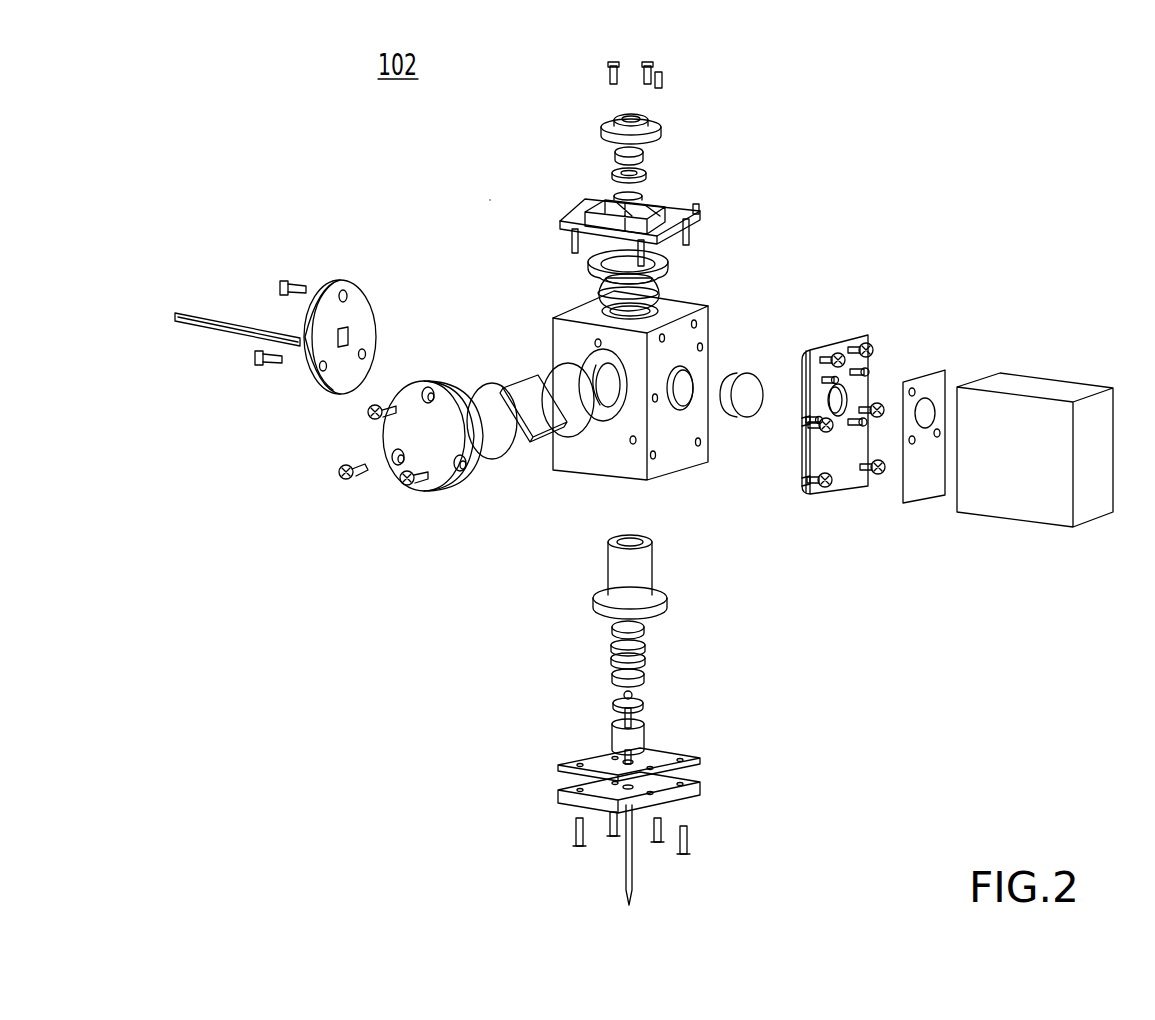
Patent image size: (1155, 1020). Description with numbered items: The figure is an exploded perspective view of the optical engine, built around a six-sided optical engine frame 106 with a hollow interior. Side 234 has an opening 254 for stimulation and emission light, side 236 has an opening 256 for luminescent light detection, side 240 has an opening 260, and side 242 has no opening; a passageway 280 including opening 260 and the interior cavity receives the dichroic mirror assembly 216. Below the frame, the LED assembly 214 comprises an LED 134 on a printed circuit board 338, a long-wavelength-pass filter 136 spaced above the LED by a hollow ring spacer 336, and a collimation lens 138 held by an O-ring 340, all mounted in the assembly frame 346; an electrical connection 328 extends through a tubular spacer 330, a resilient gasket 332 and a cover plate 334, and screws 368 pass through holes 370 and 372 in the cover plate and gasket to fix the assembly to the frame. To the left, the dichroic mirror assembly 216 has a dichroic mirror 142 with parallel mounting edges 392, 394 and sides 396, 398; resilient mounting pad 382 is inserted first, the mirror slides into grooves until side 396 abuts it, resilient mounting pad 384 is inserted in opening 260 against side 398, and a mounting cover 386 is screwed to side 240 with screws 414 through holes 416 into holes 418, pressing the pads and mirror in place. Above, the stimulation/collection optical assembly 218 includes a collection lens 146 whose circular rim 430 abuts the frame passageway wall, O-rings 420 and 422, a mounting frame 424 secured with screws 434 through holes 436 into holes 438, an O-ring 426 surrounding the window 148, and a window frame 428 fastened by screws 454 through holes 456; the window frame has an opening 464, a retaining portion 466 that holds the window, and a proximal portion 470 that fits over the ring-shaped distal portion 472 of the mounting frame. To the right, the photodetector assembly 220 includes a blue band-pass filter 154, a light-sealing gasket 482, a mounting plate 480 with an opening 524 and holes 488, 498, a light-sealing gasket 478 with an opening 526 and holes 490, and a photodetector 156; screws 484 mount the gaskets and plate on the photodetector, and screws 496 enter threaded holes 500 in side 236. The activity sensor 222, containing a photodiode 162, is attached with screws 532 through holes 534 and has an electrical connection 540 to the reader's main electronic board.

The optical engine frame 106 is at (565, 322).
The LED 134 is at (642, 702).
The long-wavelength-pass filter 136 is at (646, 660).
The collimation lens 138 is at (642, 630).
The dichroic mirror 142 is at (500, 372).
The collection lens 146 is at (675, 290).
The window 148 is at (646, 156).
The blue band-pass filter 154 is at (760, 418).
The photodetector 156 is at (1040, 382).
The photodiode 162 is at (352, 336).
The LED assembly 214 is at (780, 530).
The dichroic mirror assembly 216 is at (605, 447).
The stimulation/collection optical assembly 218 is at (500, 95).
The photodetector assembly 220 is at (1127, 300).
The activity sensor 222 is at (330, 290).
The side 234 is at (598, 282).
The side 236 is at (680, 462).
The side 240 is at (558, 328).
The side 242 is at (728, 360).
The opening 254 is at (588, 268).
The opening 256 is at (692, 392).
The opening 260 is at (652, 445).
The passageway 280 is at (608, 398).
The electrical connection 328 is at (638, 880).
The tubular spacer 330 is at (646, 734).
The gasket 332 is at (570, 762).
The cover plate 334 is at (572, 795).
The hollow ring spacer 336 is at (612, 676).
The printed circuit board 338 is at (620, 714).
The O-ring 340 is at (612, 648).
The assembly frame 346 is at (625, 560).
The screws 368 is at (578, 840).
The holes 370 is at (700, 780).
The holes 372 is at (690, 758).
The resilient mounting pad 382 is at (586, 420).
The resilient mounting pad 384 is at (468, 392).
The mounting cover 386 is at (400, 432).
The mounting edge 392 is at (490, 380).
The mounting edge 394 is at (564, 440).
The side 396 is at (545, 385).
The side 398 is at (517, 436).
The screws 414 is at (352, 484).
The holes 416 is at (452, 468).
The holes 418 is at (640, 410).
The O-ring 420 is at (668, 266).
The O-ring 422 is at (664, 256).
The mounting frame 424 is at (672, 212).
The O-ring 426 is at (650, 174).
The window frame 428 is at (662, 128).
The circular rim 430 is at (660, 302).
The screws 434 is at (690, 232).
The holes 436 is at (575, 215).
The holes 438 is at (706, 318).
The screws 454 is at (660, 78).
The holes 456 is at (660, 115).
The opening 464 is at (630, 112).
The retaining portion 466 is at (605, 112).
The proximal portion 470 is at (598, 125).
The ring-shaped distal portion 472 is at (665, 200).
The light-sealing gasket 478 is at (920, 490).
The mounting plate 480 is at (850, 470).
The light-sealing gasket 482 is at (858, 338).
The screws 484 is at (870, 372).
The holes 488 is at (884, 480).
The holes 490 is at (942, 378).
The screws 496 is at (872, 352).
The holes 498 is at (817, 500).
The threaded holes 500 is at (692, 452).
The opening 524 is at (850, 395).
The opening 526 is at (934, 415).
The screws 532 is at (290, 285).
The holes 534 is at (350, 296).
The electrical connection 540 is at (228, 318).